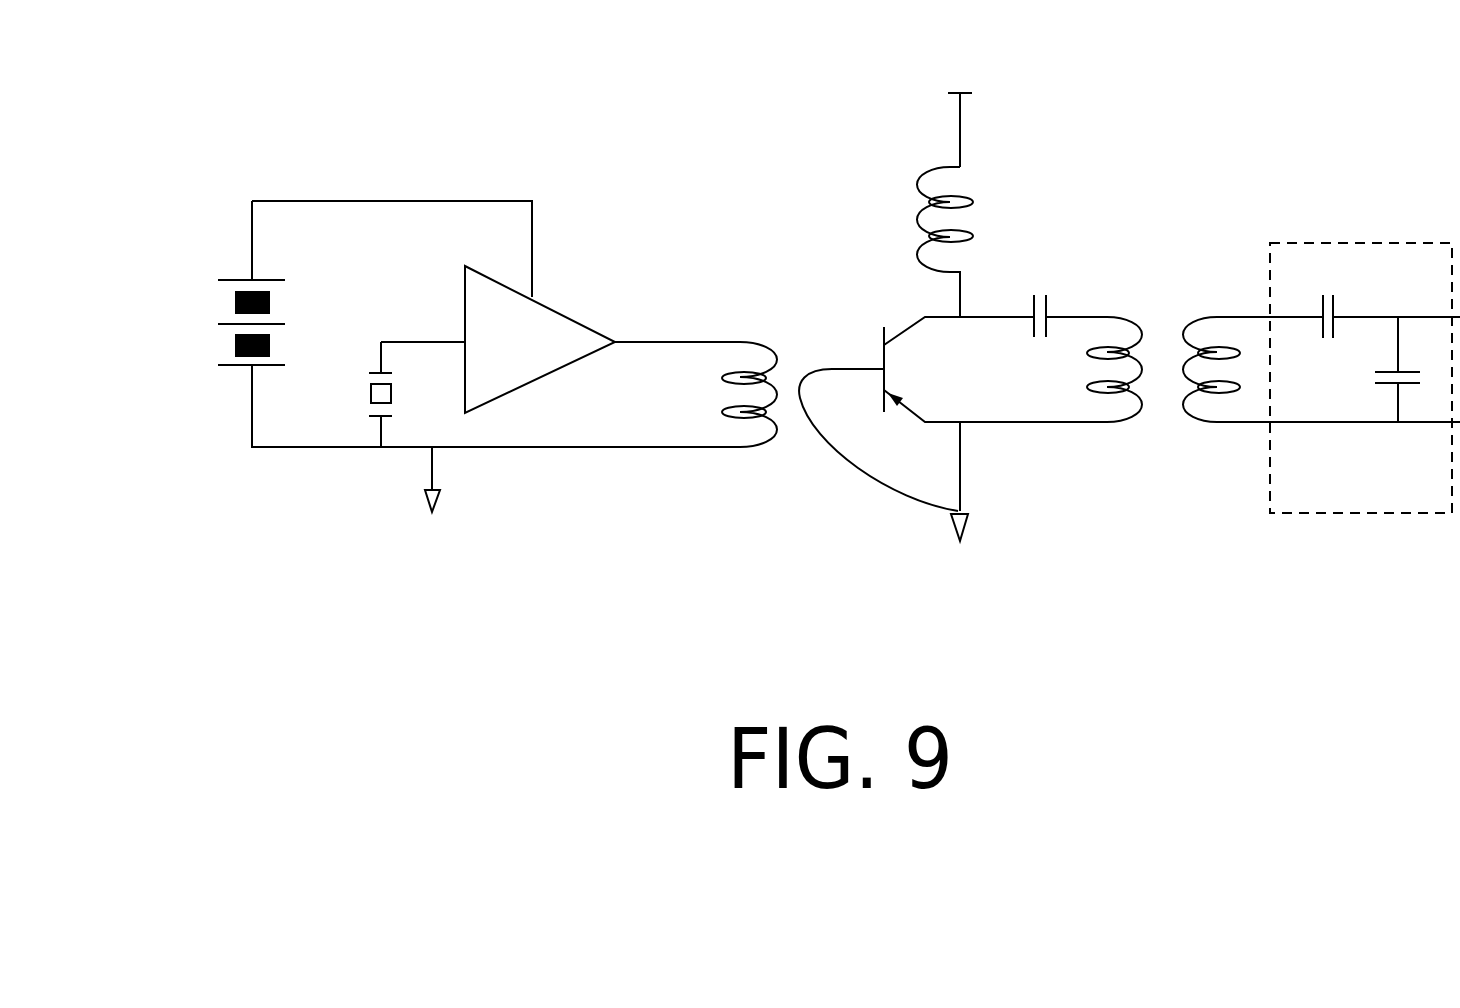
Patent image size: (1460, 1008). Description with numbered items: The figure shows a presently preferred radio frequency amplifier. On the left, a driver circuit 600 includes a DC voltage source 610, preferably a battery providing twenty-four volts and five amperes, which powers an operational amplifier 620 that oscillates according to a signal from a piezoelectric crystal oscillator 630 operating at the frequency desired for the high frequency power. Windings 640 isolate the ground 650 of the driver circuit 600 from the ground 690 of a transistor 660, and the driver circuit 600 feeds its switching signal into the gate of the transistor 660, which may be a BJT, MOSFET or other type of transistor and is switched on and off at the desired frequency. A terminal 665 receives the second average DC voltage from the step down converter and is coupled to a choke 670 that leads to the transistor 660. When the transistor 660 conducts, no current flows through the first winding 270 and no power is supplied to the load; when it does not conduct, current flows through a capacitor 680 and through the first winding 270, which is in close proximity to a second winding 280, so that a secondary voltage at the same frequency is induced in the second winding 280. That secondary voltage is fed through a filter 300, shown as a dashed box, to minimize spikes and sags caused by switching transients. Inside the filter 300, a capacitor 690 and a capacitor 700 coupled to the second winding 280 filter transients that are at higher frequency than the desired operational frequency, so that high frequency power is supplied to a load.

The driver circuit 600 is at (496, 292).
The DC voltage source 610 is at (218, 322).
The operational amplifier 620 is at (382, 394).
The piezoelectric crystal oscillator 630 is at (602, 339).
The windings 640 is at (709, 394).
The ground 650 is at (433, 505).
The terminal 665 is at (950, 112).
The choke 670 is at (916, 242).
The transistor 660 is at (953, 414).
The capacitor 680 is at (1063, 291).
The ground / capacitor 690 is at (1201, 433).
The first winding 270 is at (1115, 395).
The second winding 280 is at (1319, 395).
The filter 300 is at (1372, 235).
The capacitor 700 is at (1386, 402).